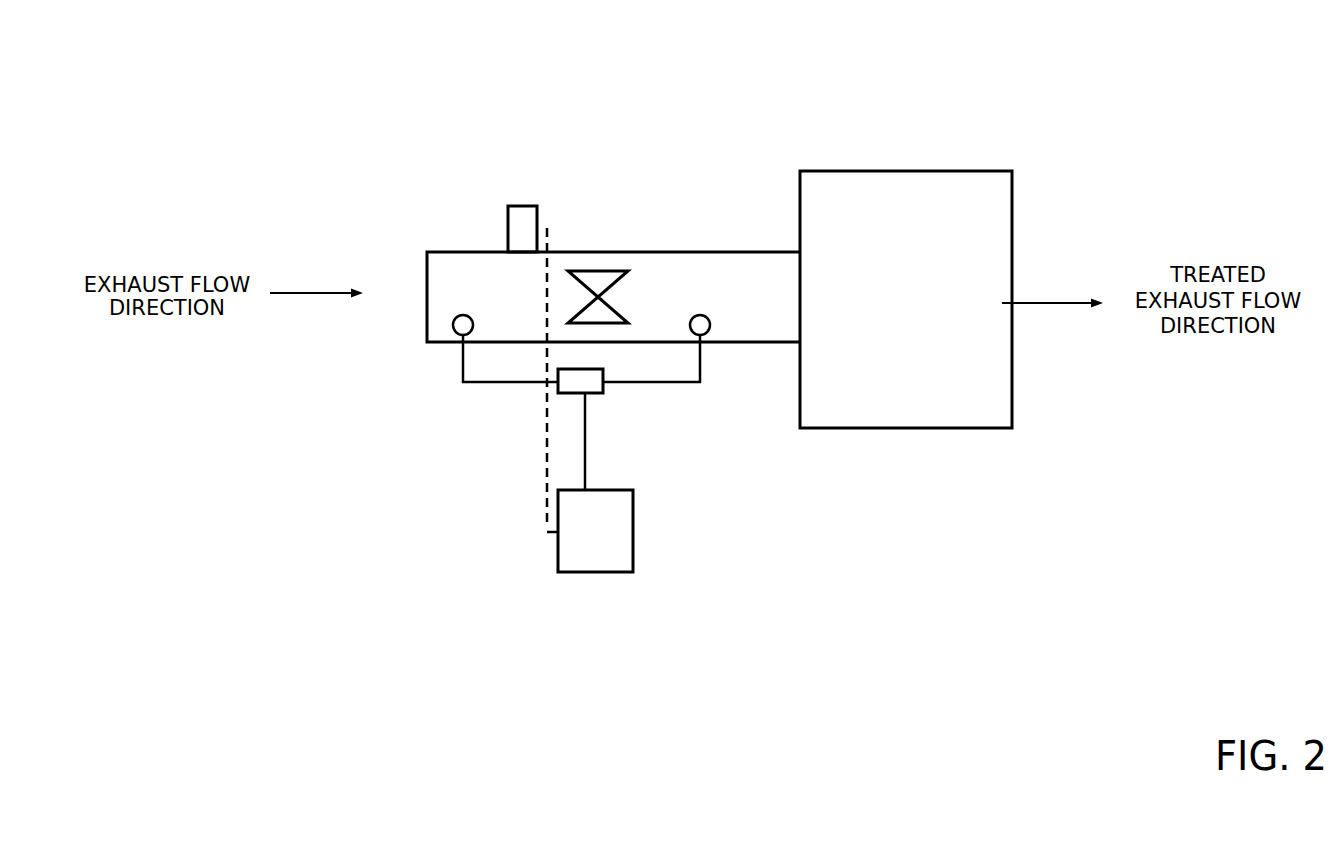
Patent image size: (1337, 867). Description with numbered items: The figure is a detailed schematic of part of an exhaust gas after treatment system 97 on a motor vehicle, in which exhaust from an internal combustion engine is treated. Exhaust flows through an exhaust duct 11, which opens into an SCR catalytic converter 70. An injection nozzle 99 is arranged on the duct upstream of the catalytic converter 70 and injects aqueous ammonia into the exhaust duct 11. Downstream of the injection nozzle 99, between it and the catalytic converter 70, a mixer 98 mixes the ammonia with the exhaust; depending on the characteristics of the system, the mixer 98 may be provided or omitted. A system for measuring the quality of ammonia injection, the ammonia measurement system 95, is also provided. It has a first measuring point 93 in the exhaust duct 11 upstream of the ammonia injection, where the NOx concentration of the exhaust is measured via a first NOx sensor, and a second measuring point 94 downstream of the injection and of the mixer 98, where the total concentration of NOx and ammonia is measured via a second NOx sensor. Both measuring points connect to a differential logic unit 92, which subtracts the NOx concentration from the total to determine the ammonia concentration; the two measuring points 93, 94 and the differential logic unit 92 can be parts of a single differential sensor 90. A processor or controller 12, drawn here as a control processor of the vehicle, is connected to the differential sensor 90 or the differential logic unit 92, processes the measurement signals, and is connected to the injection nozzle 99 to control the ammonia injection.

The exhaust duct 11 is at (440, 303).
The processor or controller 12 is at (622, 538).
The SCR catalytic converter 70 is at (902, 403).
The differential sensor 90 is at (686, 437).
The differential logic unit 92 is at (588, 388).
The first measuring point 93 is at (455, 332).
The second measuring point 94 is at (703, 335).
The ammonia measurement system 95 is at (481, 484).
The after treatment system 97 is at (782, 108).
The mixer 98 is at (605, 277).
The injection nozzle 99 is at (522, 222).